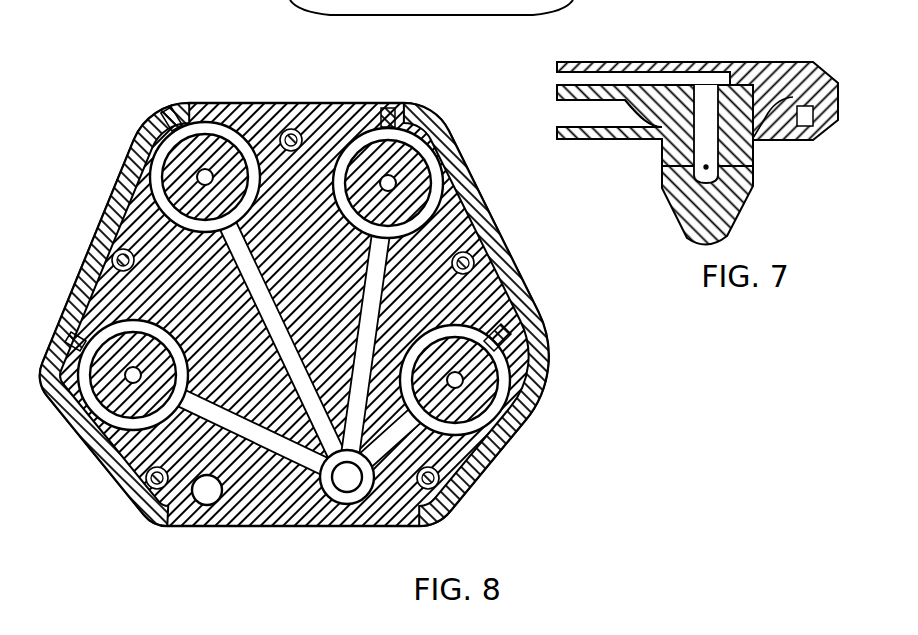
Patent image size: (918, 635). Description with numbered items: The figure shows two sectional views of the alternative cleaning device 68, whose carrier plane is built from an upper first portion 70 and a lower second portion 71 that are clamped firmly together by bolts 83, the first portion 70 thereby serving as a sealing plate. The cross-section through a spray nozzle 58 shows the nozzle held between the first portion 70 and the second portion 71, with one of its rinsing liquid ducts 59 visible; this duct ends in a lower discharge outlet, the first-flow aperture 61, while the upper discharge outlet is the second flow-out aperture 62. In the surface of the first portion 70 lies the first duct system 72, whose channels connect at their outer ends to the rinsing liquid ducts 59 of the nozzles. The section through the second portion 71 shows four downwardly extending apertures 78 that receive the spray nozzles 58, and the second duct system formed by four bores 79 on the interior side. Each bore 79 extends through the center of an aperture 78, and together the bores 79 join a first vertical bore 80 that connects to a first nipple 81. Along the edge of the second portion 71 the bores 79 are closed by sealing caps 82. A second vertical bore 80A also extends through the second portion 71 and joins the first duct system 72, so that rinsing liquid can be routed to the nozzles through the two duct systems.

In FIG. 8, the spray nozzle 58 is at (173, 150).
In FIG. 7, the spray nozzle 58 is at (745, 95).
In FIG. 8, the rinsing liquid duct 59 is at (466, 377).
In FIG. 7, the rinsing liquid duct 59 is at (703, 98).
In FIG. 7, the first-flow aperture 61 is at (667, 166).
In FIG. 7, the second flow-out aperture 62 is at (753, 143).
In FIG. 7, the alternative cleaning device 68 is at (644, 58).
In FIG. 8, the first portion 70 is at (285, 0).
In FIG. 7, the first portion 70 is at (780, 72).
In FIG. 8, the second portion 71 is at (256, 103).
In FIG. 7, the second portion 71 is at (553, 143).
In FIG. 7, the first duct system 72 is at (552, 78).
In FIG. 8, the aperture 78 is at (212, 125).
In FIG. 7, the aperture 78 is at (640, 115).
In FIG. 8, the bore 79 is at (367, 330).
In FIG. 7, the bore 79 is at (578, 113).
In FIG. 8, the first vertical bore 80 is at (346, 482).
In FIG. 8, the second vertical bore 80A is at (207, 505).
In FIG. 8, the first nipple 81 is at (355, 500).
In FIG. 8, the sealing cap 82 is at (174, 106).
In FIG. 7, the sealing cap 82 is at (814, 122).
In FIG. 8, the bolt 83 is at (298, 110).